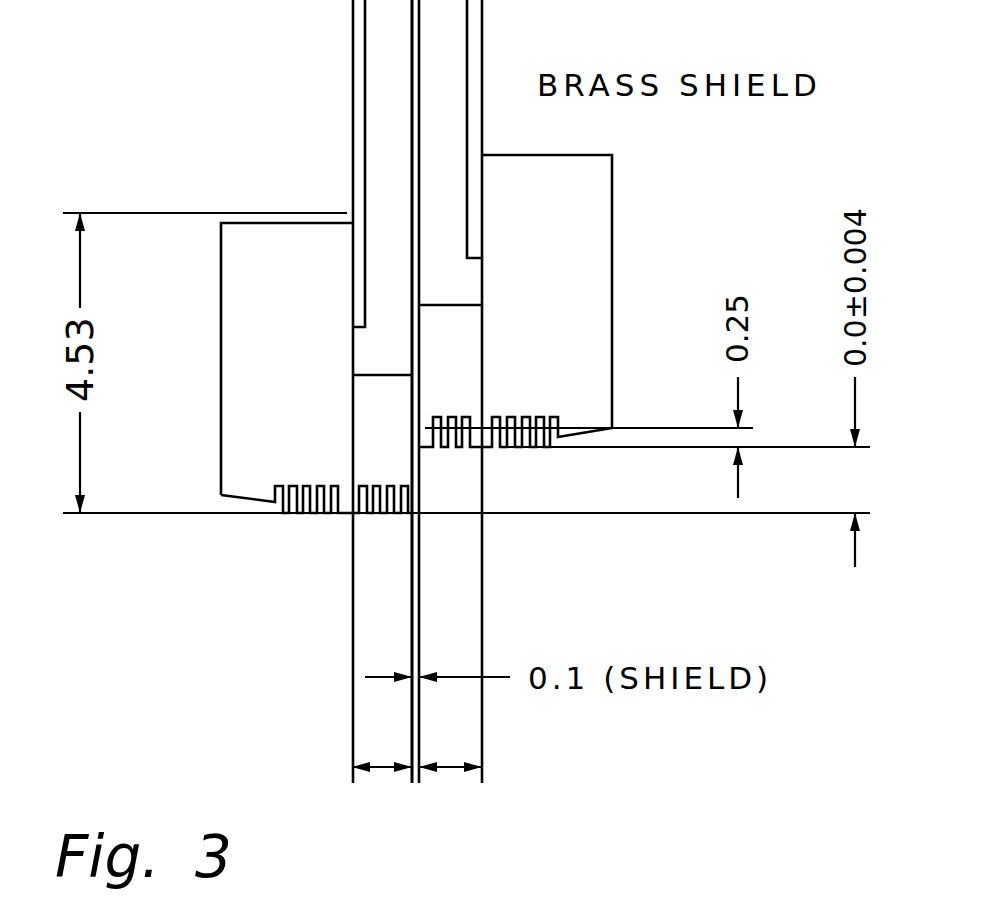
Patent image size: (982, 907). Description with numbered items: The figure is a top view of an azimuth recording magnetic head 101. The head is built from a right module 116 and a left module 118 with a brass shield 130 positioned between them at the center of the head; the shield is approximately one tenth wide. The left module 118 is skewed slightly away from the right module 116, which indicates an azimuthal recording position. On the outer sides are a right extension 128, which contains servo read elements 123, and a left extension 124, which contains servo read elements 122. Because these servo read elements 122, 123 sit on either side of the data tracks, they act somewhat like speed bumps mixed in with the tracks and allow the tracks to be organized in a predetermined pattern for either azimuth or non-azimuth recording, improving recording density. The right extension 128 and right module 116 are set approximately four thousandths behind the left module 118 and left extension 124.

The azimuth recording magnetic head 101 is at (258, 70).
The brass shield 130 is at (419, 176).
The right extension 128 is at (612, 245).
The left extension 124 is at (221, 320).
The servo read elements 122 is at (297, 470).
The servo read elements 123 is at (530, 402).
The left module 118 is at (402, 397).
The right module 116 is at (470, 345).